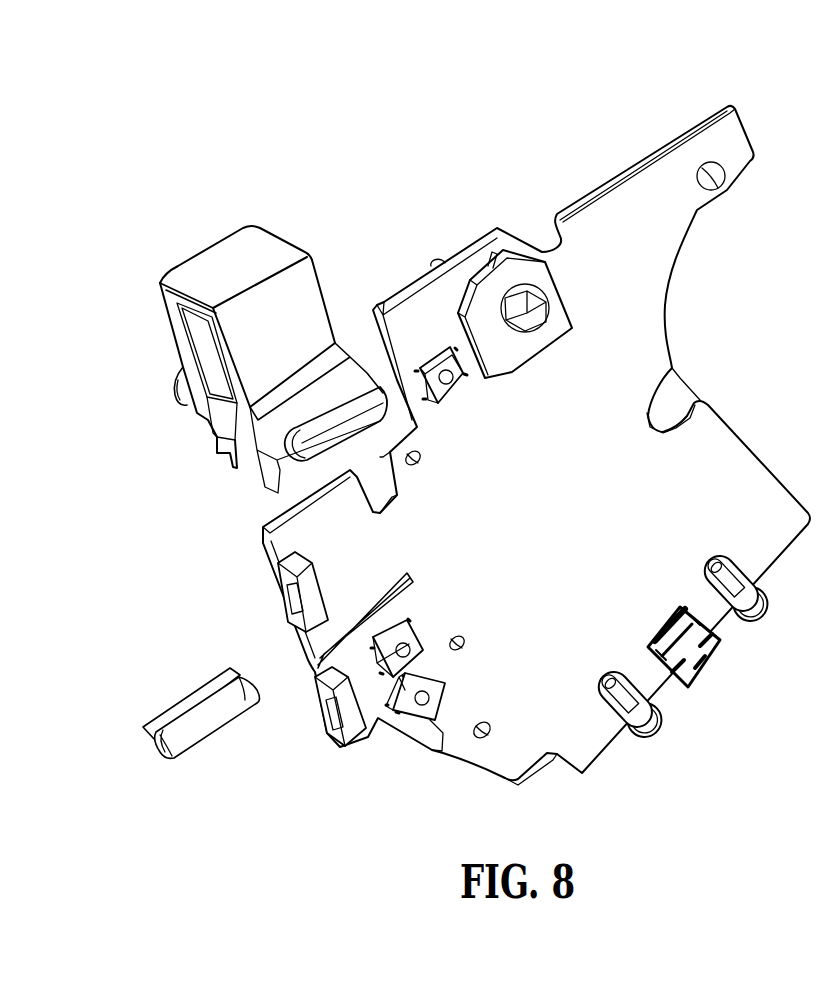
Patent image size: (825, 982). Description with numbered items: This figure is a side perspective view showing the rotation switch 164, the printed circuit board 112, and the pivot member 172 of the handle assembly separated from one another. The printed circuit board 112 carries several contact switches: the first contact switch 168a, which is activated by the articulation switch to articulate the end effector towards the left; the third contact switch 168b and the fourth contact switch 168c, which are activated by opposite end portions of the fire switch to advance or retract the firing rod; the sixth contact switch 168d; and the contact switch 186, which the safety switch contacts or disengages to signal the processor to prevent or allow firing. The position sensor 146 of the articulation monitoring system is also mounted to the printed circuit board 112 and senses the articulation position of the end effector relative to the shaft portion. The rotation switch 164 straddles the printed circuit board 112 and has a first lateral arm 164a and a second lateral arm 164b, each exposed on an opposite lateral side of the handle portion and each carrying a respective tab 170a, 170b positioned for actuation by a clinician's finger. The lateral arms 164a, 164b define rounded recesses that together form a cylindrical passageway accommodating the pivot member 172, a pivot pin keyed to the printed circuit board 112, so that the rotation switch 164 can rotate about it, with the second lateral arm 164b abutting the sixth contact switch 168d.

The printed circuit board 112 is at (735, 428).
The position sensor 146 is at (517, 273).
The rotation switch 164 is at (320, 226).
The first lateral arm 164a is at (162, 293).
The second lateral arm 164b is at (243, 326).
The first contact switch 168a is at (433, 720).
The third contact switch 168b is at (285, 606).
The fourth contact switch 168c is at (322, 712).
The sixth contact switch 168d is at (392, 676).
The tab 170a is at (177, 395).
The tab 170b is at (310, 437).
The pivot member 172 is at (197, 696).
The contact switch 186 is at (462, 384).